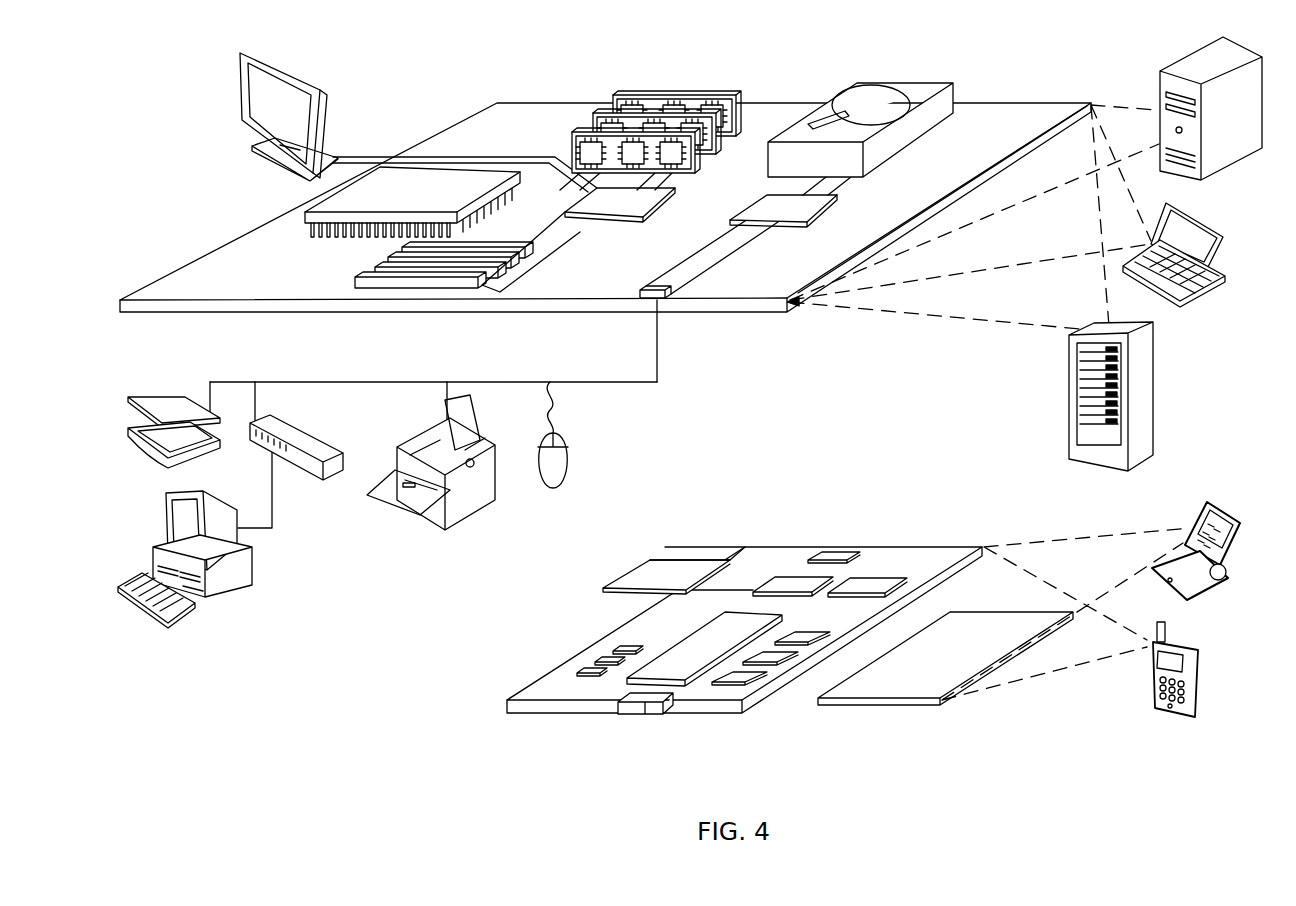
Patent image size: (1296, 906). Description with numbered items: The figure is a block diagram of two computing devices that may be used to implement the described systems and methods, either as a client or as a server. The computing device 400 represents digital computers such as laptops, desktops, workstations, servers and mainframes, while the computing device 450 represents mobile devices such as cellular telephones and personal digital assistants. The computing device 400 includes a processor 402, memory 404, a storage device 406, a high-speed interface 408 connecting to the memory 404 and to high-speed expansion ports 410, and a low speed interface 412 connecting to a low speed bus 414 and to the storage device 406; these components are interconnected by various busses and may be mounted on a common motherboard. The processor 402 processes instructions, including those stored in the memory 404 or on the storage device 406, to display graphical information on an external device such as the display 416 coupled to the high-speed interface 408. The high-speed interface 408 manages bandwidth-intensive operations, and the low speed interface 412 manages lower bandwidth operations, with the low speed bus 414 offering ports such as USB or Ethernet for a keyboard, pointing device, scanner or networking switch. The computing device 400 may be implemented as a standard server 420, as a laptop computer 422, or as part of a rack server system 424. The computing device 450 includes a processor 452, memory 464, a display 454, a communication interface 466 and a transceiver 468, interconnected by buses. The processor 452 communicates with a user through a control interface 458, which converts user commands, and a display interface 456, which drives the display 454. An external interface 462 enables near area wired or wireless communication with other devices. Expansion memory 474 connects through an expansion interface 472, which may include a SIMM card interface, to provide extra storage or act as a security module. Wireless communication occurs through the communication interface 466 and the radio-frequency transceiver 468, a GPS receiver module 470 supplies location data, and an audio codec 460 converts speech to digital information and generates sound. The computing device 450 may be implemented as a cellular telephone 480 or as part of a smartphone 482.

The computing device 400 is at (431, 76).
The processor 402 is at (305, 214).
The memory 404 is at (627, 93).
The storage device 406 is at (857, 83).
The high-speed interface 408 is at (600, 203).
The high-speed expansion ports 410 is at (380, 274).
The low speed interface 412 is at (767, 203).
The low speed bus 414 is at (667, 300).
The display 416 is at (241, 52).
The standard server 420 is at (1160, 82).
The laptop computer 422 is at (1224, 232).
The rack server system 424 is at (1070, 418).
The computing device 450 is at (483, 712).
The processor 452 is at (680, 673).
The display 454 is at (908, 688).
The display interface 456 is at (745, 683).
The control interface 458 is at (777, 660).
The audio codec 460 is at (800, 640).
The external interface 462 is at (644, 697).
The memory 464 is at (594, 667).
The communication interface 466 is at (795, 584).
The transceiver 468 is at (871, 584).
The GPS receiver module 470 is at (845, 556).
The expansion interface 472 is at (730, 559).
The expansion memory 474 is at (652, 560).
The cellular telephone 480 is at (1208, 503).
The smartphone 482 is at (1152, 680).